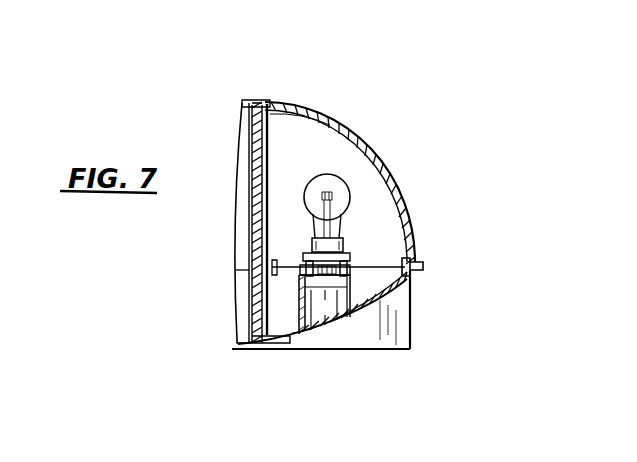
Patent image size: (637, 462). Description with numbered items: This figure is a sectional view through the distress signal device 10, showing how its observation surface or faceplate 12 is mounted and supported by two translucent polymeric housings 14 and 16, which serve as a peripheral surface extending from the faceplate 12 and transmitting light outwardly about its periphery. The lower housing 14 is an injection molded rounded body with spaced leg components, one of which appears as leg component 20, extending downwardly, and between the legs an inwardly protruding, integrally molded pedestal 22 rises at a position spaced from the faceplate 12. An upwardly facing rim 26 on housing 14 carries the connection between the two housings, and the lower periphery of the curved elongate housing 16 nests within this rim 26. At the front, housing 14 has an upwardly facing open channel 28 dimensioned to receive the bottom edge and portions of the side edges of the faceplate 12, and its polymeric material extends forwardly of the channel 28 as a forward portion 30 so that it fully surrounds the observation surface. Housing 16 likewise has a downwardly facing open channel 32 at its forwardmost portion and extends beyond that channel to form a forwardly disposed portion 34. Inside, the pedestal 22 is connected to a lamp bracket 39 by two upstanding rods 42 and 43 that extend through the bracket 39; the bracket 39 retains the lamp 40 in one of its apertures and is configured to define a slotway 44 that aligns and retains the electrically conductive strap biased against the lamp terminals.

The device 10 is at (378, 75).
The faceplate 12 is at (255, 156).
The housing 14 is at (397, 297).
The housing 16 is at (395, 158).
The leg component 20 is at (403, 338).
The pedestal 22 is at (302, 334).
The rim 26 is at (424, 265).
The channel 28 is at (262, 342).
The forward portion 30 is at (240, 337).
The channel 32 is at (259, 103).
The forwardly disposed portion 34 is at (242, 103).
The lamp bracket 39 is at (378, 251).
The lamp 40 is at (318, 173).
The upstanding rod 42 is at (310, 262).
The upstanding rod 43 is at (348, 262).
The slotway 44 is at (357, 273).